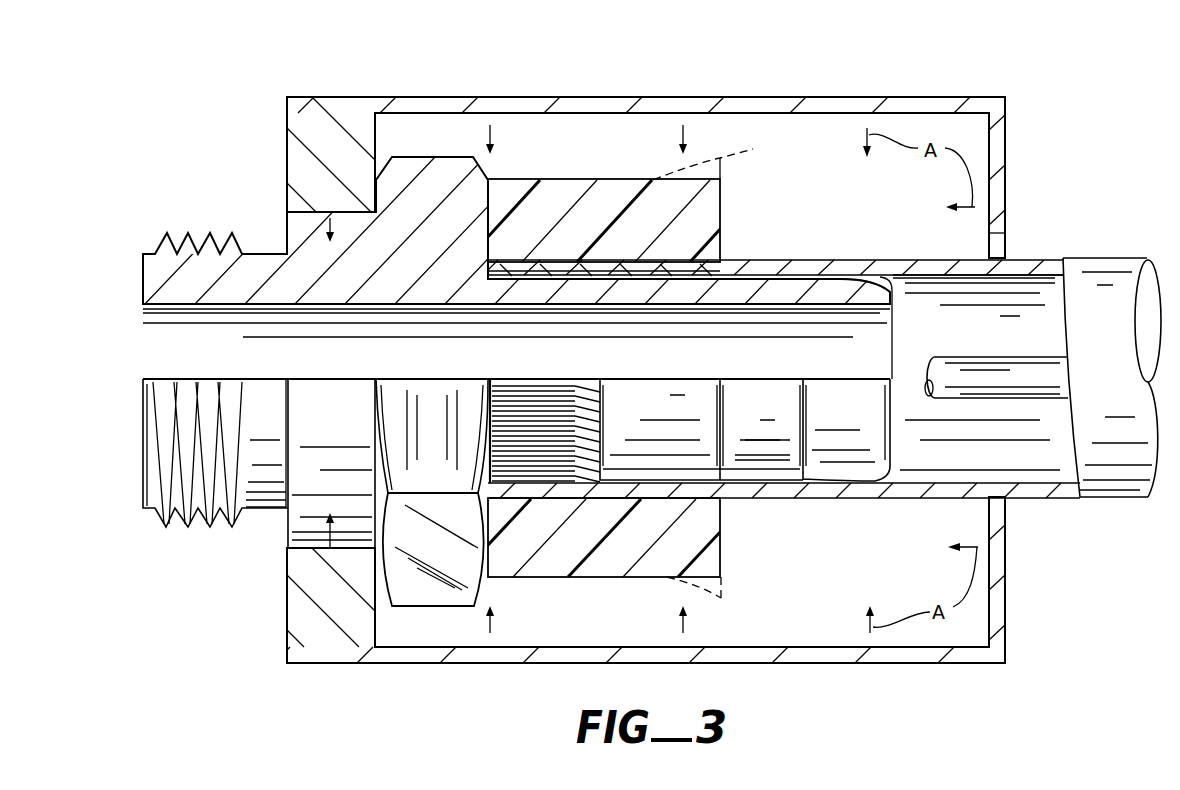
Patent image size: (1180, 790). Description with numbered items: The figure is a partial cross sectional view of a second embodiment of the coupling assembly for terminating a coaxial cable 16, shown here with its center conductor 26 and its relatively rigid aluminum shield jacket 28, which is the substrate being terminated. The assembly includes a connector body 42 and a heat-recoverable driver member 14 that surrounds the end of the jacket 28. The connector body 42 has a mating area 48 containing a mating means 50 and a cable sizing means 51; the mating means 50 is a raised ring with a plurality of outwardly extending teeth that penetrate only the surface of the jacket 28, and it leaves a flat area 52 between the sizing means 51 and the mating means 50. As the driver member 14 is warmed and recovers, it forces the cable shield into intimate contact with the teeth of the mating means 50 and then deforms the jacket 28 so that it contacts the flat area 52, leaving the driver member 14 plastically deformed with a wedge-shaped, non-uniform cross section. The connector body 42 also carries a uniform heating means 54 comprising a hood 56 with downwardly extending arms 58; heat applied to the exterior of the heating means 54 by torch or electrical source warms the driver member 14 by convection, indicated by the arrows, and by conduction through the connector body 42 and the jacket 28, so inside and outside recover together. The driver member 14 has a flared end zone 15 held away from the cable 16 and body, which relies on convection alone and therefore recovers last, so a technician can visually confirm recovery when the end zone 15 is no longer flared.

The driver member 14 is at (617, 198).
The flared end zone 15 is at (717, 368).
The coaxial cable 16 is at (1101, 252).
The center conductor 26 is at (1045, 383).
The jacket 28 is at (888, 268).
The connector body 42 is at (347, 422).
The mating area 48 is at (655, 278).
The mating means 50 is at (572, 470).
The cable sizing means 51 is at (790, 472).
The flat area 52 is at (688, 495).
The uniform heating means 54 is at (827, 95).
The hood 56 is at (525, 107).
The downwardly extending arms 58 is at (303, 163).